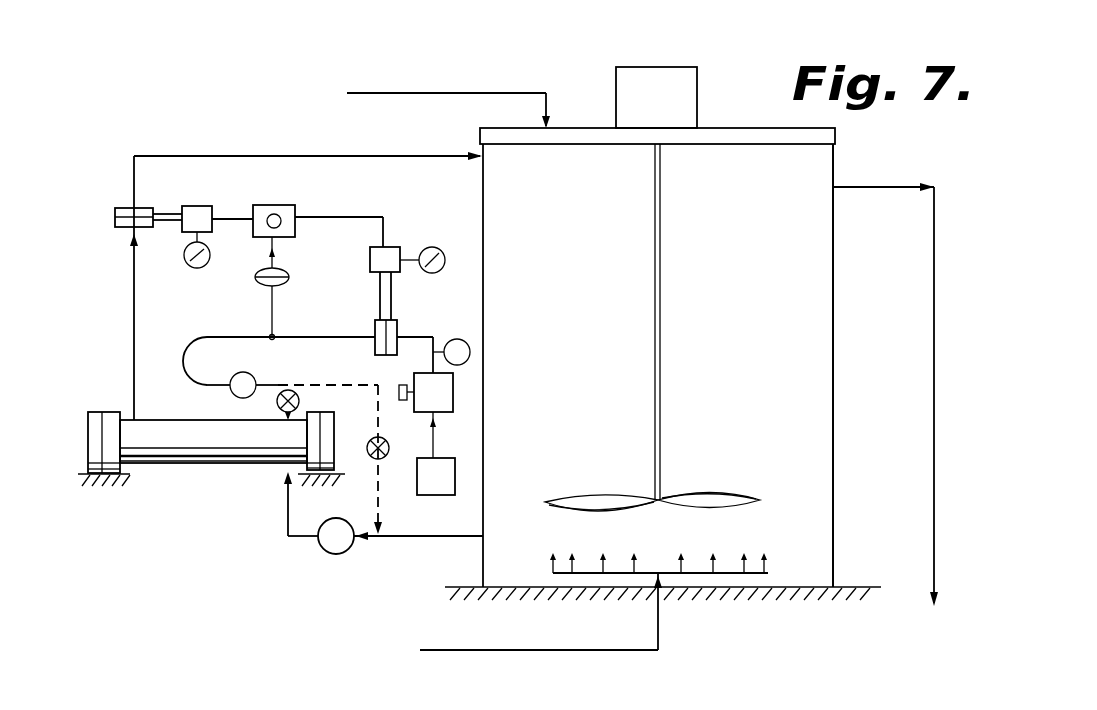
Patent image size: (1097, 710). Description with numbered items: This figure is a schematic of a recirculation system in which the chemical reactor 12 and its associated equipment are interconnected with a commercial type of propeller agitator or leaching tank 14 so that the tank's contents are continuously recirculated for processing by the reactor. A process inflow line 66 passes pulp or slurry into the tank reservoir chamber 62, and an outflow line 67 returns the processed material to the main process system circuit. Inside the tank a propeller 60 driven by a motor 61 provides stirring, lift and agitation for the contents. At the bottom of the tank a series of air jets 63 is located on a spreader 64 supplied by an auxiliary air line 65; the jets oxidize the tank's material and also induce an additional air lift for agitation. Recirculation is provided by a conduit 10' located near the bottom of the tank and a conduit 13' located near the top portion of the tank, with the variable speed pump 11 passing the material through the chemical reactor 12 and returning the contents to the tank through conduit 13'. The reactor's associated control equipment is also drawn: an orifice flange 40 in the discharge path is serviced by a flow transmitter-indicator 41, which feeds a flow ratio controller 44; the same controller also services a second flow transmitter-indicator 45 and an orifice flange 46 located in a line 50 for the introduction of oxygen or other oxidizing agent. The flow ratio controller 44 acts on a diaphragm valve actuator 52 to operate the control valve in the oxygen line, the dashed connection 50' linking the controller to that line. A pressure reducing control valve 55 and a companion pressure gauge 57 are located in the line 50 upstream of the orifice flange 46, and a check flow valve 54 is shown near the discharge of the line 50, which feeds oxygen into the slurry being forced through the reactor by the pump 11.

The conduit 10' is at (418, 567).
The variable speed pump 11 is at (330, 555).
The chemical reactor assembly 12 is at (200, 468).
The conduit 13' is at (306, 263).
The agitator tank 14 is at (834, 250).
The orifice flange 40 is at (118, 210).
The flow transmitter-indicator 41 is at (200, 208).
The flow ratio controller 44 is at (277, 206).
The second flow transmitter-indicator 45 is at (397, 250).
The orifice flange 46 is at (397, 330).
The line 50 is at (279, 335).
The control line 50' is at (359, 459).
The diaphragm valve actuator 52 is at (262, 284).
The check flow valve 54 is at (238, 395).
The pressure reducing control valve 55 is at (447, 393).
The pressure gauge 57 is at (466, 345).
The propeller 60 is at (708, 500).
The motor 61 is at (697, 84).
The tank reservoir chamber 62 is at (798, 446).
The air jets 63 is at (603, 562).
The spreader 64 is at (727, 575).
The auxiliary air line 65 is at (602, 648).
The process inflow line 66 is at (490, 92).
The outflow line 67 is at (934, 352).